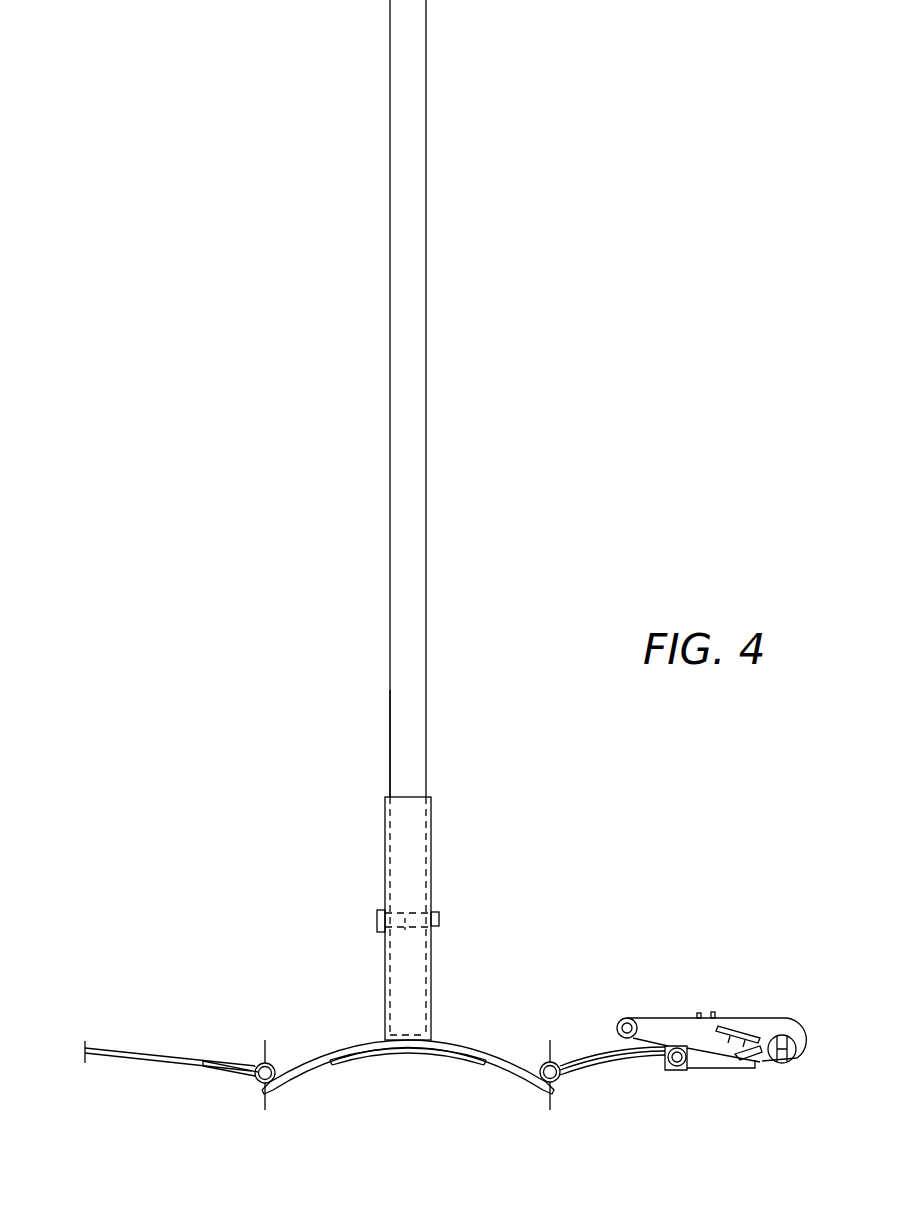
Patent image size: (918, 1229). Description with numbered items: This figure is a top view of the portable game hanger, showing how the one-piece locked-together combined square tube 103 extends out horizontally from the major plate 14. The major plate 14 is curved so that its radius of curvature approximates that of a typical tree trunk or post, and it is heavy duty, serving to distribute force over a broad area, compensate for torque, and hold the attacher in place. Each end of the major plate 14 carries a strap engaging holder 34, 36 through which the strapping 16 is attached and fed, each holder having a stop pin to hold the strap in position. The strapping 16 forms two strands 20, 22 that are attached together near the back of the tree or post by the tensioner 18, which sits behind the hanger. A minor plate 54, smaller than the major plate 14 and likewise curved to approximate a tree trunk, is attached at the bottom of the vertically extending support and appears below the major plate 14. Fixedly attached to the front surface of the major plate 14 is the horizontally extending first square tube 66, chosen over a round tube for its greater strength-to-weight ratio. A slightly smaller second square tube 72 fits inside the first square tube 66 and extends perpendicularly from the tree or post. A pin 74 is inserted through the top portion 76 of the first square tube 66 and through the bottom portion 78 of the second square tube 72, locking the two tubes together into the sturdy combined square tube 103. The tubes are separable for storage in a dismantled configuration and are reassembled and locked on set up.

The combined square tube 103 is at (453, 510).
The second square tube 72 is at (428, 594).
The bottom portion 78 is at (390, 722).
The first square tube 66 is at (433, 822).
The top portion 76 is at (412, 875).
The pin 74 is at (406, 922).
The major plate 14 is at (520, 1069).
The minor plate 54 is at (372, 1056).
The strap engaging holder 36 is at (274, 1064).
The strap engaging holder 34 is at (545, 1063).
The strapping 16 is at (113, 1048).
The strand 22 is at (184, 1051).
The strand 20 is at (587, 1058).
The tensioner 18 is at (735, 1017).